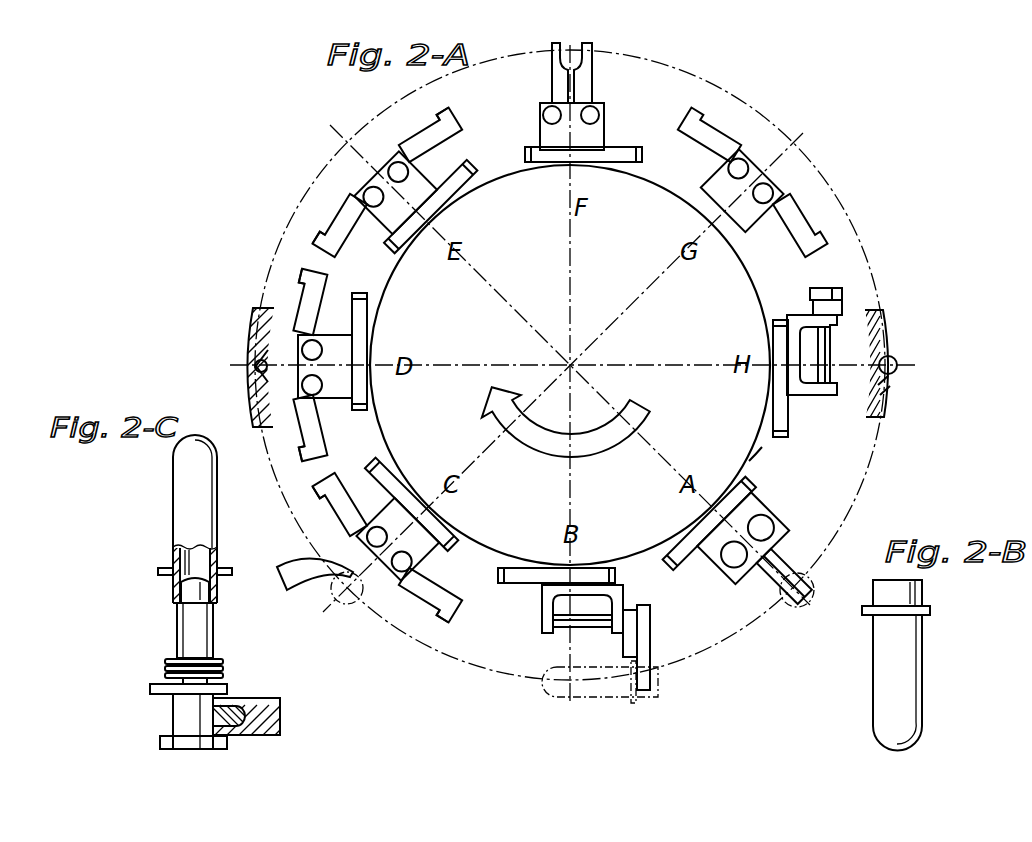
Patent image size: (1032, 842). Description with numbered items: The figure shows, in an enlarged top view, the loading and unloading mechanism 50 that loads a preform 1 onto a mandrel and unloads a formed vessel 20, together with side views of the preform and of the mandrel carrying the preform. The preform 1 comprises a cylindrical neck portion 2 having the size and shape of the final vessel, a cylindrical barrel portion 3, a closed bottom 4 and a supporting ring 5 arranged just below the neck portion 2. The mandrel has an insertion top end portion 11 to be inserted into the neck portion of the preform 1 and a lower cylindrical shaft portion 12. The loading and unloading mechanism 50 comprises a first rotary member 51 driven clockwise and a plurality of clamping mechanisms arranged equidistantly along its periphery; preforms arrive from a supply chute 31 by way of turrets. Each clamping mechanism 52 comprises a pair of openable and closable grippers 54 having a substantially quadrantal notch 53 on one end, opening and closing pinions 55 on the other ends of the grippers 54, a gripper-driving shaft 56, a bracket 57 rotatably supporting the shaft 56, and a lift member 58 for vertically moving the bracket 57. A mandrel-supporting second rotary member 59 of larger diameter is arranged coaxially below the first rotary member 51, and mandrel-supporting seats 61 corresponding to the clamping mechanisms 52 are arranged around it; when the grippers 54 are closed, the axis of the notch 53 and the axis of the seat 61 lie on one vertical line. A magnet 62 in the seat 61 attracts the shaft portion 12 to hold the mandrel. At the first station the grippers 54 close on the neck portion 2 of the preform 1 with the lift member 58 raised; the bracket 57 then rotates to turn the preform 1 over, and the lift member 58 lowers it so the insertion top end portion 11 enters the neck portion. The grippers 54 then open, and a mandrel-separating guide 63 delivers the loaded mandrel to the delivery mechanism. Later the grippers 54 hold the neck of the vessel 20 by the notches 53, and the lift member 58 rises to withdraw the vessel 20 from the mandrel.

In FIG. 2-A, the preform 1 is at (603, 698).
In FIG. 2-C, the preform 1 is at (168, 522).
In FIG. 2-B, the preform 1 is at (928, 652).
In FIG. 2-C, the neck portion 2 is at (218, 592).
In FIG. 2-B, the neck portion 2 is at (922, 597).
In FIG. 2-B, the barrel portion 3 is at (922, 684).
In FIG. 2-B, the closed bottom 4 is at (905, 750).
In FIG. 2-C, the supporting ring 5 is at (232, 571).
In FIG. 2-B, the supporting ring 5 is at (930, 612).
In FIG. 2-C, the insertion top end portion 11 is at (182, 597).
In FIG. 2-C, the cylindrical shaft portion 12 is at (173, 712).
In FIG. 2-A, the vessel 20 is at (894, 373).
In FIG. 2-A, the supply chute 31 is at (750, 461).
In FIG. 2-A, the loading and unloading mechanism 50 is at (672, 128).
In FIG. 2-A, the first rotary member 51 is at (682, 337).
In FIG. 2-A, the clamping mechanism 52 is at (790, 300).
In FIG. 2-A, the notch 53 is at (722, 145).
In FIG. 2-A, the gripper 54 is at (740, 157).
In FIG. 2-A, the opening and closing pinion 55 is at (758, 178).
In FIG. 2-A, the gripper-driving shaft 56 is at (833, 356).
In FIG. 2-A, the bracket 57 is at (782, 258).
In FIG. 2-A, the lift member 58 is at (757, 280).
In FIG. 2-A, the second rotary member 59 is at (884, 414).
In FIG. 2-C, the second rotary member 59 is at (262, 698).
In FIG. 2-A, the mandrel-supporting seat 61 is at (884, 392).
In FIG. 2-A, the magnet 62 is at (244, 380).
In FIG. 2-C, the magnet 62 is at (280, 716).
In FIG. 2-A, the mandrel-separating guide 63 is at (298, 565).
In FIG. 2-C, the mandrel-separating guide 63 is at (213, 686).